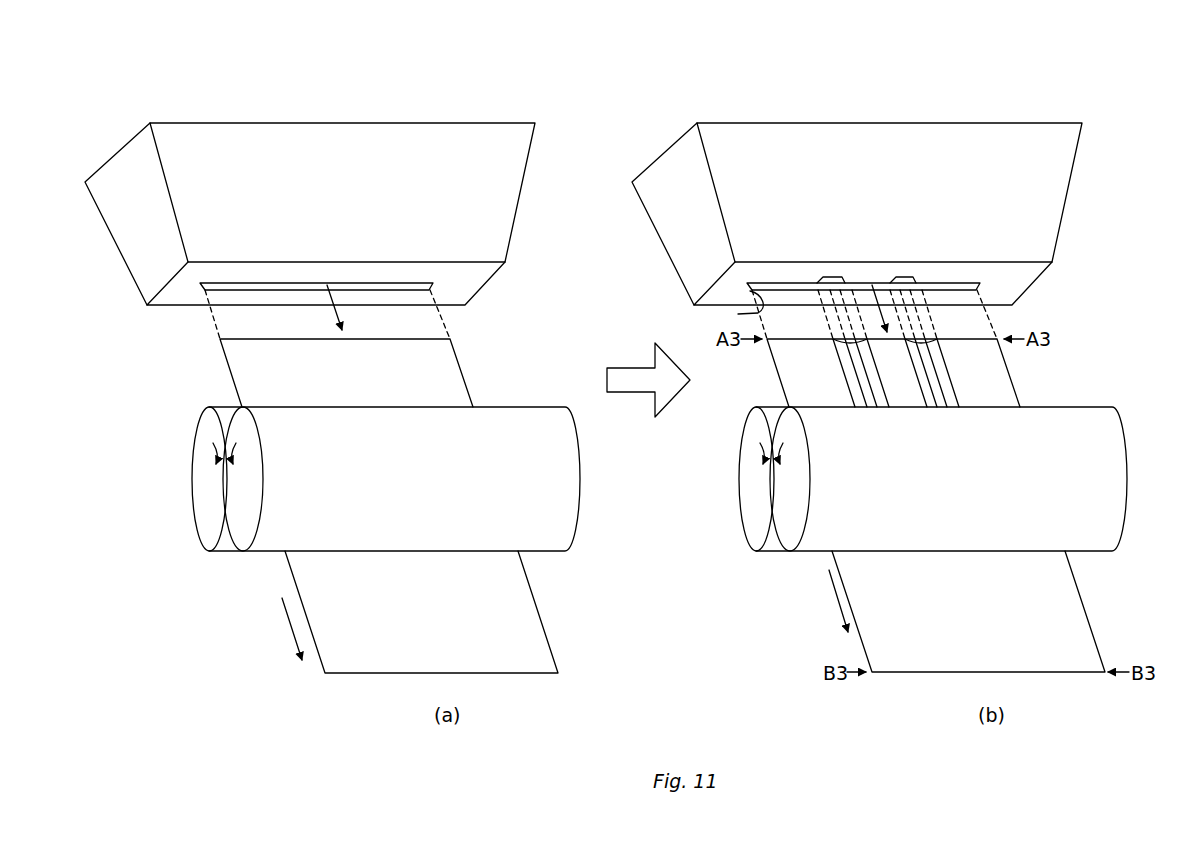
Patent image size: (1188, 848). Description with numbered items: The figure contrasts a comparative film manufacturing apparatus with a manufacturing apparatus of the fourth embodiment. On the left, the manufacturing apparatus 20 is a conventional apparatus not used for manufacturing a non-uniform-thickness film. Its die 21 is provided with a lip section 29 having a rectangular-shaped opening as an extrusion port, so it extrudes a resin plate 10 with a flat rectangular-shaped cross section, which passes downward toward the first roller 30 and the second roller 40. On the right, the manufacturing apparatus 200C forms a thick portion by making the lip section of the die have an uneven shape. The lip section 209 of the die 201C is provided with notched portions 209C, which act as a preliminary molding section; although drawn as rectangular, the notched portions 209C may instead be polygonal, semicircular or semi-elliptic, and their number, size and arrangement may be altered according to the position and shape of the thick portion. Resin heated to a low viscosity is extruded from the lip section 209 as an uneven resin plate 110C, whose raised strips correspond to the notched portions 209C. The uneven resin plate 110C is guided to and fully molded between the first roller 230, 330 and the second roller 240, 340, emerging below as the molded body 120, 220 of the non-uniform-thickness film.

The manufacturing apparatus 20 is at (528, 115).
The die 21 is at (518, 193).
The lip section 29 is at (206, 293).
The resin plate 10 is at (455, 368).
The first roller 30 is at (275, 545).
The second roller 40 is at (200, 510).
The manufacturing apparatus 200C is at (1083, 102).
The die 201C is at (1058, 196).
The lip section 209 is at (755, 311).
The notched portions 209C is at (840, 277).
The uneven resin plate 110C is at (1002, 373).
The first roller 230 is at (936, 515).
The first roller 330 is at (820, 546).
The second roller 240 is at (739, 495).
The second roller 340 is at (748, 510).
The molded body 120 is at (995, 611).
The molded body 220 is at (1072, 620).